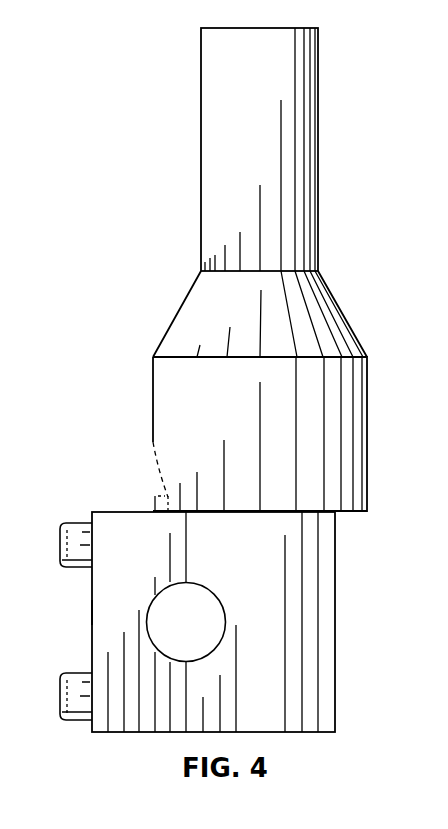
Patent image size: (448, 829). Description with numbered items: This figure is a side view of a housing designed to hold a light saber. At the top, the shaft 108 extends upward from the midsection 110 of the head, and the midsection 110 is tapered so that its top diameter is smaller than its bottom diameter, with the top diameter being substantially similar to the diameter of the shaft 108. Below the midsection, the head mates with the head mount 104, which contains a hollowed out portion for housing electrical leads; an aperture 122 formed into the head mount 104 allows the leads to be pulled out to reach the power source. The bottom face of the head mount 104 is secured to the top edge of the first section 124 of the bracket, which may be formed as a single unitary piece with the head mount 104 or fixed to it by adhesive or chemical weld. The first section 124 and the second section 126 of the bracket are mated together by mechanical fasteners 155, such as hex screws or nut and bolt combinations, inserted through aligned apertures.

The shaft 108 is at (304, 160).
The midsection 110 is at (320, 311).
The head mount 104 is at (350, 458).
The aperture 122 is at (158, 476).
The first section 124 is at (319, 613).
The second section 126 is at (93, 613).
The mechanical fasteners 155 is at (66, 524).